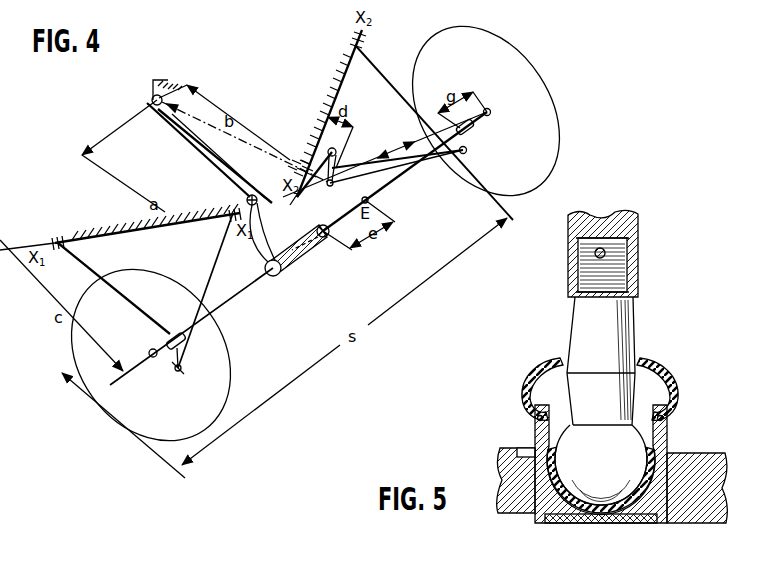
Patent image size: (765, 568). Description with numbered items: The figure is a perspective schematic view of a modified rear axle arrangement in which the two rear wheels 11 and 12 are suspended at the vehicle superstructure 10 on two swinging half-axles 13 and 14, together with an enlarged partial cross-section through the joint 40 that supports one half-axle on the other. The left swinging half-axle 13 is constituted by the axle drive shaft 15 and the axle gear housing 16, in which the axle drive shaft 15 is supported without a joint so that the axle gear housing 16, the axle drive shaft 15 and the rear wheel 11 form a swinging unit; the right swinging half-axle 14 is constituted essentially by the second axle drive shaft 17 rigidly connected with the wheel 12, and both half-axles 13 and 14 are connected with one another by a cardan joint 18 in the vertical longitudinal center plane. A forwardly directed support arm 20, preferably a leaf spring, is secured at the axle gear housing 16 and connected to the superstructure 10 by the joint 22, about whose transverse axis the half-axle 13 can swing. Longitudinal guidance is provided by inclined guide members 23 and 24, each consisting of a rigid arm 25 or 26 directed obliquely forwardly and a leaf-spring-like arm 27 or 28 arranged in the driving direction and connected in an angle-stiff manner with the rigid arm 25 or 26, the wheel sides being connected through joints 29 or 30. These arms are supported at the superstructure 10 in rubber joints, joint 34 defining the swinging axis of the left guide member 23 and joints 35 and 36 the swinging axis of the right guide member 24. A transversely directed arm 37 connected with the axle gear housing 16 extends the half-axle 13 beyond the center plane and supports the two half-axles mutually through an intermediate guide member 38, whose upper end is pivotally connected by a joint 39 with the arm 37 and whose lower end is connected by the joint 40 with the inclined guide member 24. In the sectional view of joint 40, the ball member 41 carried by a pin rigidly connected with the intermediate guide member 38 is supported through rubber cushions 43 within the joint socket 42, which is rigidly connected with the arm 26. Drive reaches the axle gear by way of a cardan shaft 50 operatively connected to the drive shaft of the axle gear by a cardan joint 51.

In FIG. 4, the vehicle superstructure 10 is at (165, 80).
In FIG. 4, the rear wheel 11 is at (128, 425).
In FIG. 4, the rear wheel 12 is at (548, 150).
In FIG. 4, the left swinging half-axle 13 is at (243, 298).
In FIG. 4, the right swinging half-axle 14 is at (404, 186).
In FIG. 4, the axle drive shaft 15 is at (220, 312).
In FIG. 4, the axle gear housing 16 is at (298, 270).
In FIG. 4, the second axle drive shaft 17 is at (415, 165).
In FIG. 4, the cardan joint 18 is at (323, 240).
In FIG. 4, the support arm 20 is at (207, 148).
In FIG. 4, the joint 22 is at (152, 100).
In FIG. 4, the inclined guide member 23 is at (190, 325).
In FIG. 4, the inclined guide member 24 is at (380, 154).
In FIG. 4, the rigid arm 25 is at (220, 249).
In FIG. 4, the rigid arm 26 is at (410, 141).
In FIG. 5, the rigid arm 26 is at (702, 454).
In FIG. 4, the leaf-spring-like arm 27 is at (88, 270).
In FIG. 4, the leaf-spring-like arm 28 is at (398, 96).
In FIG. 4, the joint 29 is at (178, 372).
In FIG. 4, the joint 30 is at (466, 150).
In FIG. 4, the rubber joint 34 is at (55, 237).
In FIG. 4, the rubber joint 35 is at (303, 163).
In FIG. 4, the rubber joint 36 is at (350, 41).
In FIG. 4, the transversely directed arm 37 is at (298, 200).
In FIG. 4, the intermediate guide member 38 is at (337, 162).
In FIG. 5, the intermediate guide member 38 is at (640, 277).
In FIG. 4, the joint 39 is at (327, 140).
In FIG. 4, the joint 40 is at (334, 183).
In FIG. 5, the joint 40 is at (530, 518).
In FIG. 5, the ball member 41 is at (565, 450).
In FIG. 5, the joint socket 42 is at (552, 525).
In FIG. 5, the rubber cushions 43 is at (592, 525).
In FIG. 4, the cardan shaft 50 is at (176, 134).
In FIG. 4, the cardan joint 51 is at (246, 198).